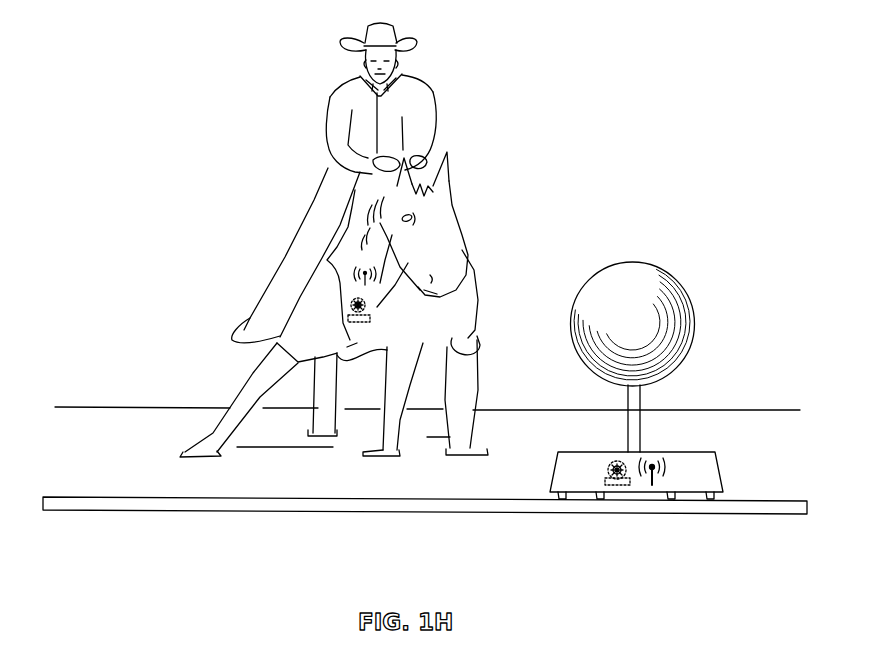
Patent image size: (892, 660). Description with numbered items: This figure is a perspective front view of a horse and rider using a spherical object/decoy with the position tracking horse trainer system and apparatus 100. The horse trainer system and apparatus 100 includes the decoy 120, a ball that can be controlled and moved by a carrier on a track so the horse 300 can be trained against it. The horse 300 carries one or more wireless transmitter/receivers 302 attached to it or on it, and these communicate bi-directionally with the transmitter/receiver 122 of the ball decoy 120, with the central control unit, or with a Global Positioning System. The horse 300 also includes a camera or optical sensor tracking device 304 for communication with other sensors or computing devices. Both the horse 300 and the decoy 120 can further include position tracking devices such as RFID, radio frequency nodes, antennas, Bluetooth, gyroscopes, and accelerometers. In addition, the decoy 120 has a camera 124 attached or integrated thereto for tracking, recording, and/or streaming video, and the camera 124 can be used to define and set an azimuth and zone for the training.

The horse trainer system and apparatus 100 is at (700, 431).
The decoy 120 is at (658, 268).
The transmitter/receiver 122 is at (648, 483).
The camera 124 is at (607, 479).
The horse 300 is at (487, 195).
The wireless transmitter/receivers 302 is at (365, 286).
The camera or optical sensor tracking device 304 is at (347, 309).